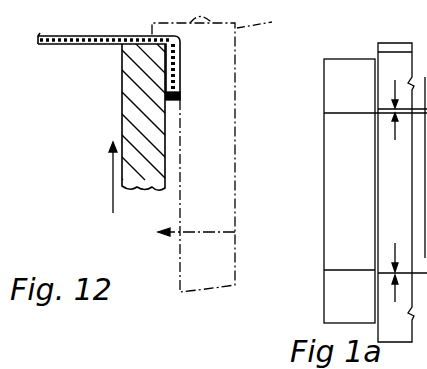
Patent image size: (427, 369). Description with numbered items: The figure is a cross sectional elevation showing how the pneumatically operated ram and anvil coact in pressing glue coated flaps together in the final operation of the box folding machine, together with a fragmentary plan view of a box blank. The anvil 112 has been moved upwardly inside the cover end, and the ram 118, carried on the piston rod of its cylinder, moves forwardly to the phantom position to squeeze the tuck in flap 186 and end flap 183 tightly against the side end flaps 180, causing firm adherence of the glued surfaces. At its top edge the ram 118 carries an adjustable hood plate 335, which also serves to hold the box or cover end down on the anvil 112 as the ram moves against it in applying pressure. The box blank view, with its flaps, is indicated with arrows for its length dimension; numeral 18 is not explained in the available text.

In FIG. 12, the anvil 112 is at (133, 82).
In FIG. 12, the tuck-in flap 186 is at (140, 56).
In FIG. 12, the end flap 183 is at (182, 70).
In FIG. 12, the end side flap 180 is at (178, 98).
In FIG. 12, the ram 118 is at (212, 178).
In FIG. 12, the hood plate 335 is at (271, 16).
In FIG. 1A, the frame member 18 is at (375, 174).